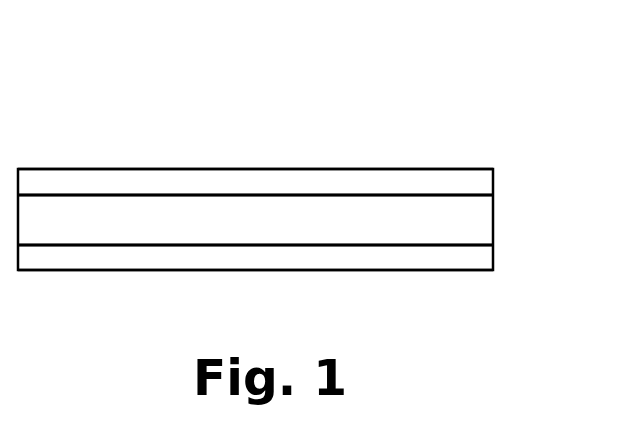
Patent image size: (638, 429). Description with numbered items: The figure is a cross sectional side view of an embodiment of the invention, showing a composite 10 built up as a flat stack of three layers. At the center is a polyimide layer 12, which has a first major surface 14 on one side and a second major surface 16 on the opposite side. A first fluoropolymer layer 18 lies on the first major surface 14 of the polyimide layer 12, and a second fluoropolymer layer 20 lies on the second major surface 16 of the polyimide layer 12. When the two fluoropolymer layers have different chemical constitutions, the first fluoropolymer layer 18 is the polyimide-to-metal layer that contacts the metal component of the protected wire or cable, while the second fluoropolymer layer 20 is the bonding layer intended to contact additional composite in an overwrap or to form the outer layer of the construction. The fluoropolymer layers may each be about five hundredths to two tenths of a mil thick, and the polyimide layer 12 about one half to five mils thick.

The composite 10 is at (435, 96).
The polyimide layer 12 is at (470, 218).
The first major surface 14 is at (105, 196).
The second major surface 16 is at (94, 244).
The first fluoropolymer layer 18 is at (478, 183).
The second fluoropolymer layer 20 is at (477, 256).